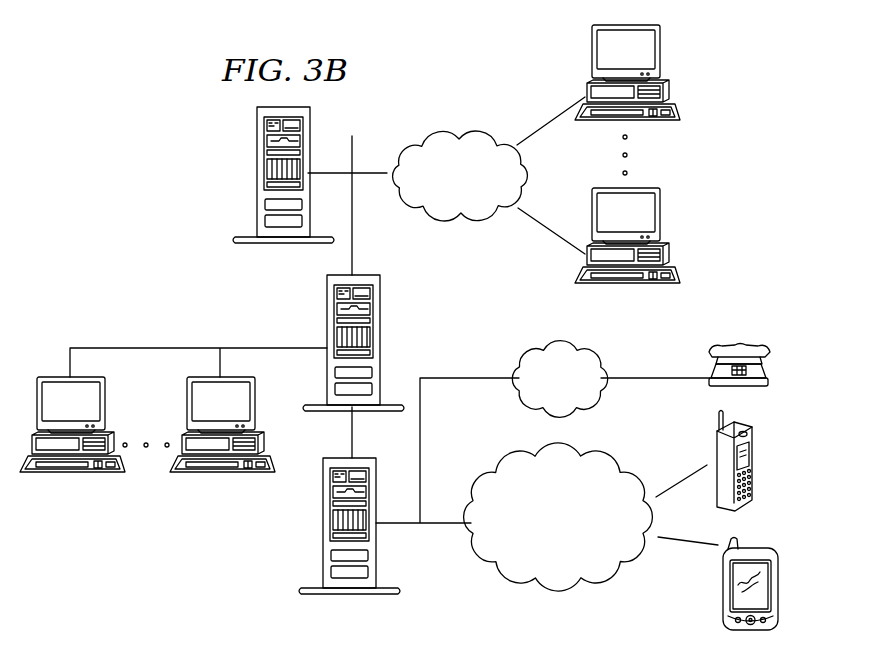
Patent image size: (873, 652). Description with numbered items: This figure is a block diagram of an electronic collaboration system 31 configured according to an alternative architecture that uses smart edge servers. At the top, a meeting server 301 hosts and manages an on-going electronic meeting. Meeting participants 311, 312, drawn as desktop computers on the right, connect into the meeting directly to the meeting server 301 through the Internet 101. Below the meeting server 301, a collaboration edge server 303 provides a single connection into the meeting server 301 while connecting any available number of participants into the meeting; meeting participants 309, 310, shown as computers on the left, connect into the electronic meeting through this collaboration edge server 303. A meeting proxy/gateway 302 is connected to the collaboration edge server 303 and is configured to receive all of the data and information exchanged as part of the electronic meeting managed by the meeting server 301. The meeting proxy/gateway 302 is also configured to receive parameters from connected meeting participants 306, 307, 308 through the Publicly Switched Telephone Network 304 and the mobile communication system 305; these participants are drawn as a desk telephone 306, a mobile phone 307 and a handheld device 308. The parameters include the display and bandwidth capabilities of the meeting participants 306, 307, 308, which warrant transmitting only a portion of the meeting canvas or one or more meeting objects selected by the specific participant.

The electronic collaboration system 31 is at (128, 181).
The Internet 101 is at (458, 132).
The meeting server 301 is at (257, 163).
The meeting proxy/gateway 302 is at (323, 535).
The collaboration edge server 303 is at (380, 331).
The Publicly Switched Telephone Network (PSTN) 304 is at (586, 340).
The mobile communication system 305 is at (598, 590).
The meeting participant 306 is at (742, 343).
The meeting participant 307 is at (755, 472).
The meeting participant 308 is at (779, 601).
The meeting participant 309 is at (70, 474).
The meeting participant 310 is at (222, 474).
The meeting participant 311 is at (661, 52).
The meeting participant 312 is at (661, 213).